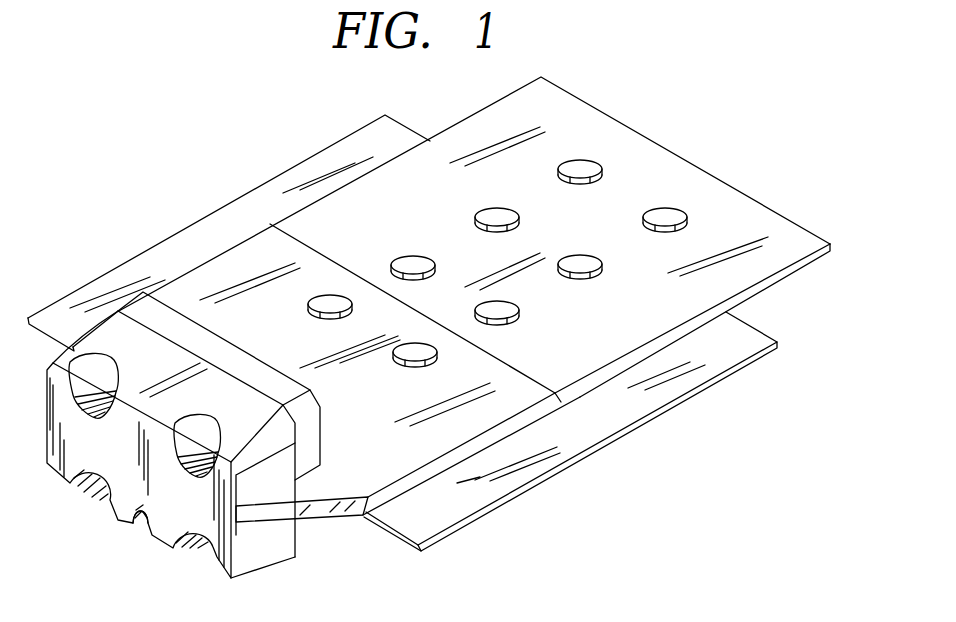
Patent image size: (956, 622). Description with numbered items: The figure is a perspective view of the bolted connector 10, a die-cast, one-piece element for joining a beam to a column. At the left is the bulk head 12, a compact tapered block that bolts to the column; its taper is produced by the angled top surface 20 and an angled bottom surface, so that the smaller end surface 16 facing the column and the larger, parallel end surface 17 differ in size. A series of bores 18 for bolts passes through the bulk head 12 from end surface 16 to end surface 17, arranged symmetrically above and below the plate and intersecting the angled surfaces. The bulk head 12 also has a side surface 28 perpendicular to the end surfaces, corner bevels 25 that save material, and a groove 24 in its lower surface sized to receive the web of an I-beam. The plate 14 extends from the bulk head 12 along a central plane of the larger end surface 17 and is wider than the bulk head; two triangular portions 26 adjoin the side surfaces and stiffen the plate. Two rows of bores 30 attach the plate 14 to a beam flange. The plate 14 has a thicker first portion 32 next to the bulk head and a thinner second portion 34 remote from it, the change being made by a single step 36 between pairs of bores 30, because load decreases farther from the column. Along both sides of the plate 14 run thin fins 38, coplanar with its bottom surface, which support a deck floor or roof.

The bolted connector 10 is at (625, 501).
The bulk head 12 is at (100, 532).
The plate 14 is at (763, 183).
The end surface 16 is at (55, 428).
The end surface 17 is at (172, 312).
The bores 18 is at (192, 455).
The angled top surface 20 is at (130, 343).
The groove 24 is at (142, 527).
The corner bevels 25 is at (272, 430).
The triangular portions 26 is at (305, 495).
The side surface 28 is at (262, 548).
The bores 30 is at (585, 162).
The first portion 32 is at (425, 447).
The second portion 34 is at (752, 258).
The step 36 is at (583, 383).
The fins 38 is at (283, 190).